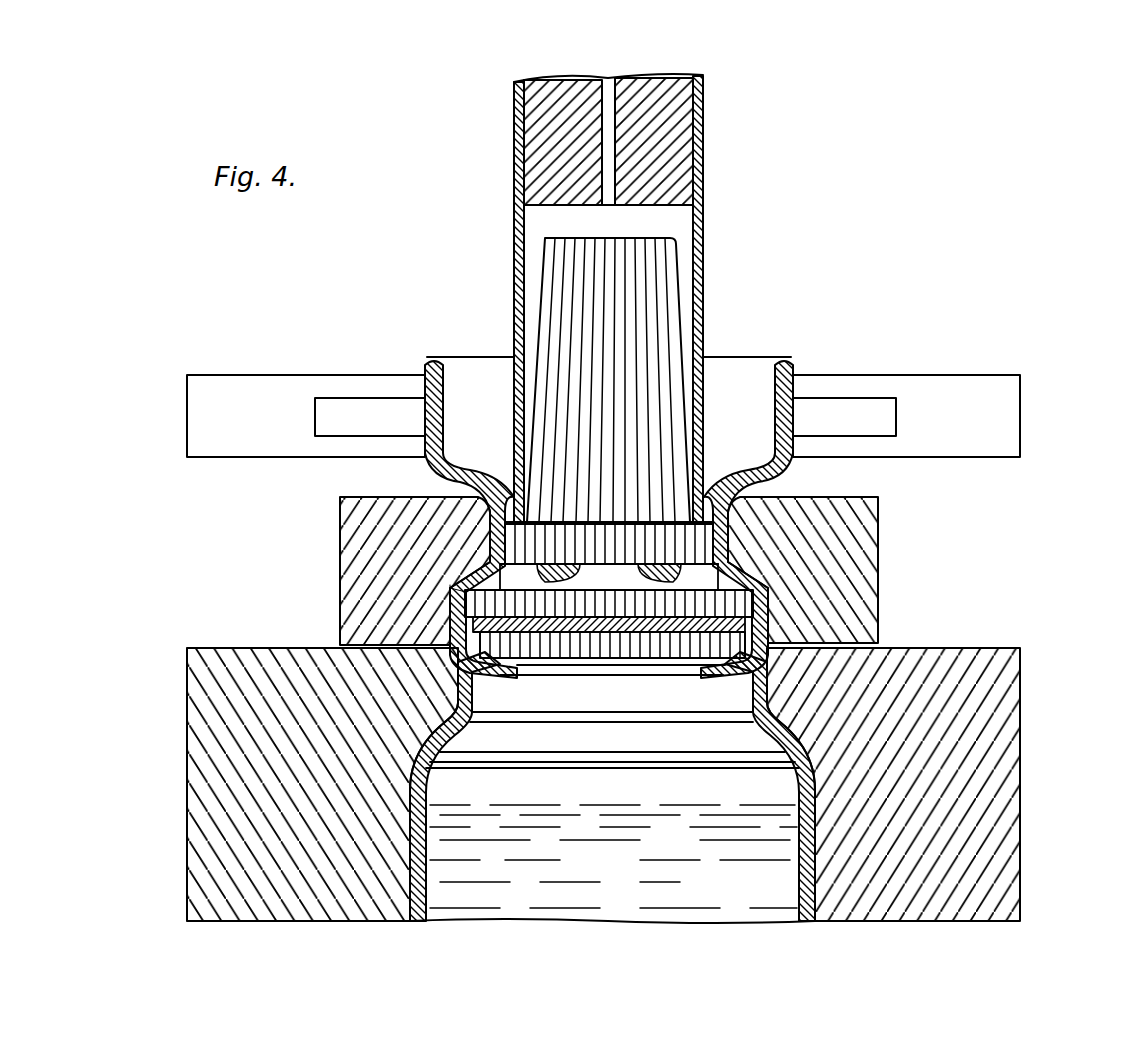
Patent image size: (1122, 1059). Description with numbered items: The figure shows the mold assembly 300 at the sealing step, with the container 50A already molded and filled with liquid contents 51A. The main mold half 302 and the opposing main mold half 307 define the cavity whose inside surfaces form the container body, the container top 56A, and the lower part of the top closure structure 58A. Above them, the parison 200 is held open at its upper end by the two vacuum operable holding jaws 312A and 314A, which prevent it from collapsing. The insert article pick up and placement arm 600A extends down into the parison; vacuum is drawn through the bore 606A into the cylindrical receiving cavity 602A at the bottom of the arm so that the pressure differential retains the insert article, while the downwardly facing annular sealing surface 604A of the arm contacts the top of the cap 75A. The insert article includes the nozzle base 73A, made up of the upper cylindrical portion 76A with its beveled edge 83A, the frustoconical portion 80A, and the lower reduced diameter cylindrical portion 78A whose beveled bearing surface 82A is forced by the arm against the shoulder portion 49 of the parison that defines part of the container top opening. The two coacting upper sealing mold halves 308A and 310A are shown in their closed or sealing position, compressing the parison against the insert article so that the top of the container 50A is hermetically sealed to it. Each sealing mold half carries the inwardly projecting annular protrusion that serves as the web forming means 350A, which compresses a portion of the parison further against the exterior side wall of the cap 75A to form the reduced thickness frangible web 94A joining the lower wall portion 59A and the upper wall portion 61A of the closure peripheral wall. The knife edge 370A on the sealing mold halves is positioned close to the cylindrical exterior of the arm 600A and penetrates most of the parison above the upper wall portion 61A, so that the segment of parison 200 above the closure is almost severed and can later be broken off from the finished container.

The insert article pick up and placement arm 600A is at (672, 298).
The receiving cavity 602A is at (690, 220).
The bore 606A is at (608, 203).
The cap 75A is at (668, 268).
The parison 200 is at (611, 496).
The holding jaw 312A is at (252, 385).
The holding jaw 314A is at (930, 382).
The knife edge 370A is at (470, 500).
The annular sealing surface 604A is at (682, 518).
The upper sealing mold half 308A is at (345, 504).
The upper sealing mold half 310A is at (880, 510).
The upper wall portion 61A is at (480, 528).
The frangible web 94A is at (505, 548).
The web forming means 350A is at (718, 560).
The beveled edge 83A is at (700, 580).
The lower wall portion 59A is at (455, 568).
The top closure structure 58A is at (443, 595).
The upper cylindrical portion 76A is at (742, 608).
The frustoconical portion 80A is at (468, 622).
The lower cylindrical portion 78A is at (742, 648).
The mold half 302 is at (215, 692).
The right base block 307 is at (1012, 700).
The shoulder portion 49 is at (770, 688).
The nozzle base 73A is at (570, 640).
The bearing surface 82A is at (662, 700).
The container top 56A is at (825, 758).
The mold assembly 300 is at (168, 798).
The liquid contents 51A is at (620, 884).
The container 50A is at (655, 781).